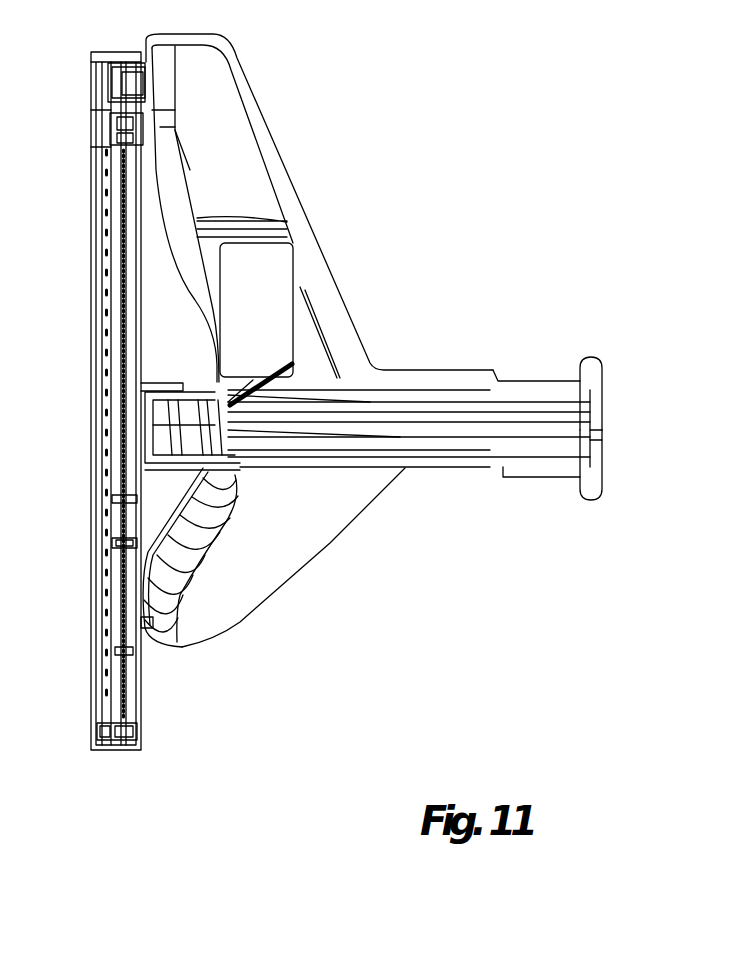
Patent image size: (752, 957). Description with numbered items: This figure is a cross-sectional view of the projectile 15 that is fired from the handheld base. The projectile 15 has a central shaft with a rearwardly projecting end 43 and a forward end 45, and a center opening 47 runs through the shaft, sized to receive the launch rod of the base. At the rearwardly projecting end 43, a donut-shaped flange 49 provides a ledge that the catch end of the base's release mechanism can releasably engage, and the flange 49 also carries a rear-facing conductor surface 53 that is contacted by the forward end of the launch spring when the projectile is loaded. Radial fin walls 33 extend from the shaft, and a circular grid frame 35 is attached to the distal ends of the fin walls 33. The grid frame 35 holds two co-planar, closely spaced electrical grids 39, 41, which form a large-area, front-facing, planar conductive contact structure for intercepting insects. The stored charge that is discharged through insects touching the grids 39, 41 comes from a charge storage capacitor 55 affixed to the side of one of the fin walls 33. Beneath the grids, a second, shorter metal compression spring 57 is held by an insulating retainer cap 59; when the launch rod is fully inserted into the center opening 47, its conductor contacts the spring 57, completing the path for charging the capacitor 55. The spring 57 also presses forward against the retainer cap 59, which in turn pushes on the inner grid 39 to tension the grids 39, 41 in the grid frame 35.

The projectile 15 is at (514, 165).
The radial fin walls 33 is at (262, 132).
The circular grid frame 35 is at (94, 740).
The inner electrical grid 39 is at (141, 683).
The electrical grid 41 is at (100, 677).
The rearwardly projecting end 43 is at (553, 372).
The forward end 45 is at (253, 380).
The center opening 47 is at (586, 434).
The donut-shaped flange 49 is at (597, 357).
The rear-facing conductor surface 53 is at (605, 480).
The charge storage capacitor 55 is at (267, 267).
The second metal compression spring 57 is at (148, 424).
The insulating retainer cap 59 is at (162, 388).